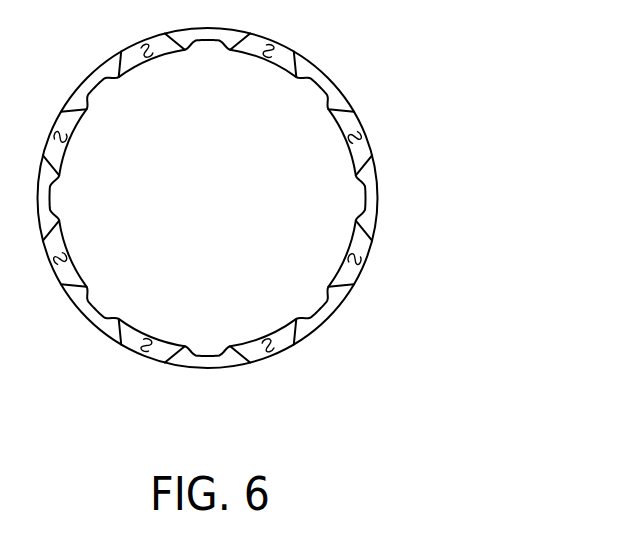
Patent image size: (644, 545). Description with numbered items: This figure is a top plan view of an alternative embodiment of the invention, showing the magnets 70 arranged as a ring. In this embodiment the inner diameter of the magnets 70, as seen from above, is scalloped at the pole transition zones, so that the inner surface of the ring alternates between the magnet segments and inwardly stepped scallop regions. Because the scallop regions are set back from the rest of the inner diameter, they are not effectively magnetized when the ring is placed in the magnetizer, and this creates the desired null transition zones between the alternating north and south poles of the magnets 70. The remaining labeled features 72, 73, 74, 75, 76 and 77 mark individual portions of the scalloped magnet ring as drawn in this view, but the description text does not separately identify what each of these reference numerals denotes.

The magnets 70 is at (310, 73).
The pole piece 72 is at (352, 108).
The permanent magnet segment 73 is at (370, 143).
The pole piece 74 is at (375, 200).
The permanent magnet segment 75 is at (368, 257).
The pole piece 76 is at (333, 312).
The permanent magnet segment 77 is at (272, 351).